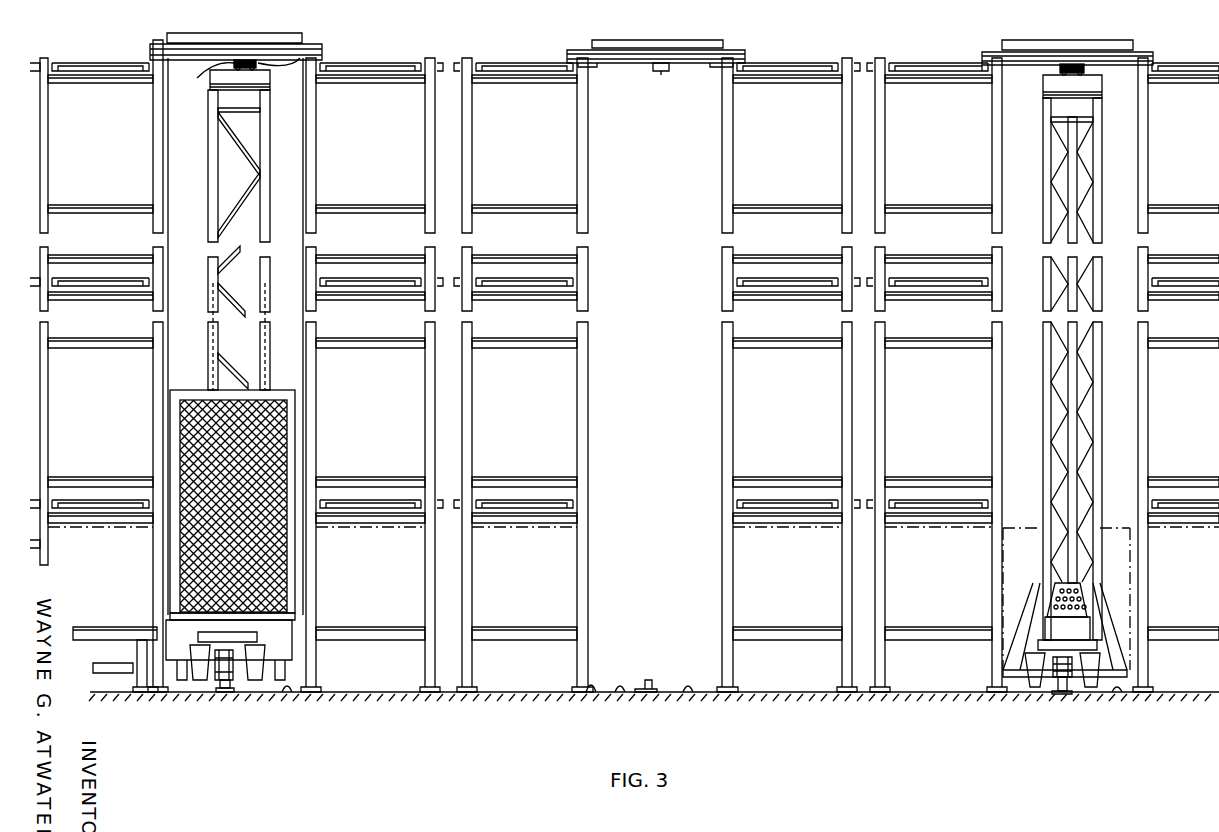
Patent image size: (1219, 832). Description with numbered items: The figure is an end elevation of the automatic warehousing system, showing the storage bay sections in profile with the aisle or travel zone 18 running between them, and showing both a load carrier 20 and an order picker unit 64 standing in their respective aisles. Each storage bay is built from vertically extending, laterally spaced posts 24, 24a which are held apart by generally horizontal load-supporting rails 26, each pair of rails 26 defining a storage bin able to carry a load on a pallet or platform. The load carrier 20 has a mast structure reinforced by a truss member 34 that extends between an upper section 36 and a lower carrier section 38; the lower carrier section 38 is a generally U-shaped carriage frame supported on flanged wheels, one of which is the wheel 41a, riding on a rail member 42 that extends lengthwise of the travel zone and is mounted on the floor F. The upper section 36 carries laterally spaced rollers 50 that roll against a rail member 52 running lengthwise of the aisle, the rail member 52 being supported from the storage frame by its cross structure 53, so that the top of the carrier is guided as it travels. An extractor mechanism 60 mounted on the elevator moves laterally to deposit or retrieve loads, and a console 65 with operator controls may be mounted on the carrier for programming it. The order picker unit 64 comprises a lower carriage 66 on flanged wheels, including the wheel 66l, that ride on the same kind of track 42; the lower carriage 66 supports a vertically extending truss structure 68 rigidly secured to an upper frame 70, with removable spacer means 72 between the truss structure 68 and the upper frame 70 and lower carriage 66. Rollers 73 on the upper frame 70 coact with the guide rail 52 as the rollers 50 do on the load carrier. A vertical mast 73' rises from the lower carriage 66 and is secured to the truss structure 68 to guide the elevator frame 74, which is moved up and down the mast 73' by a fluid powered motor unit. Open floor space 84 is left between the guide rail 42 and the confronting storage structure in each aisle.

The aisle or travel zone 18 is at (288, 120).
The load carrier 20 is at (1100, 465).
The post 24 is at (163, 183).
The post 24a is at (466, 130).
The load-supporting rail 26 is at (122, 205).
The truss member 34 is at (1083, 368).
The upper section 36 is at (1083, 92).
The lower carrier section 38 is at (1040, 648).
The flanged wheel 41a is at (1058, 682).
The rail member 42 is at (228, 686).
The roller 50 is at (1057, 68).
The rail member 52 is at (250, 60).
The cross structure 53 is at (213, 47).
The extractor mechanism 60 is at (1120, 632).
The order picker unit 64 is at (168, 666).
The console 65 is at (1073, 587).
The lower carriage 66 is at (258, 640).
The drive wheel 66l is at (213, 663).
The truss structure 68 is at (266, 212).
The upper frame 70 is at (270, 78).
The removable spacer means 72 is at (215, 88).
The roller 73 is at (267, 58).
The vertical mast 73' is at (239, 336).
The elevator frame 74 is at (296, 452).
The open floor space 84 is at (287, 690).
The floor F is at (620, 692).